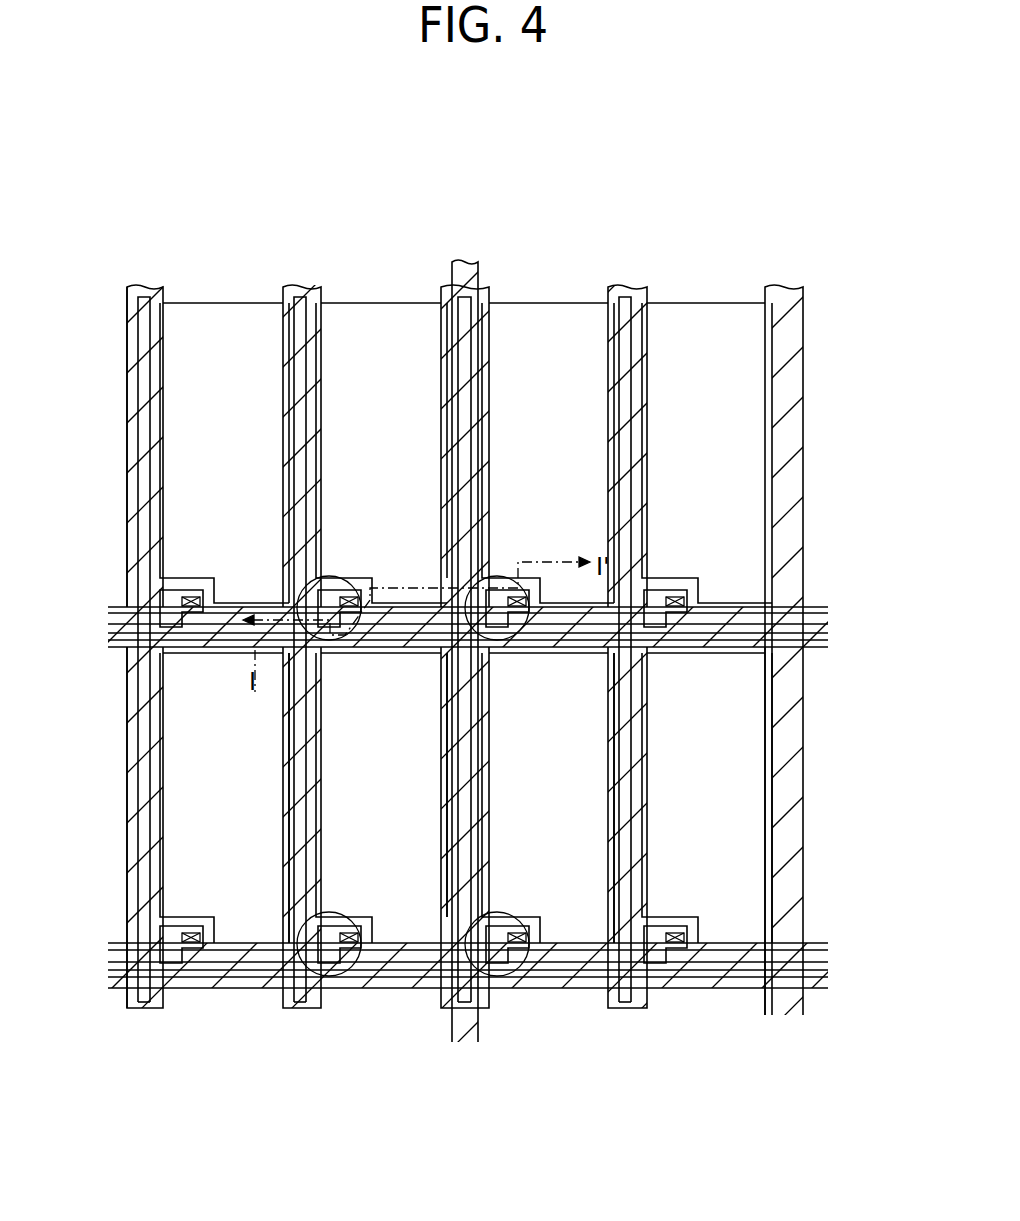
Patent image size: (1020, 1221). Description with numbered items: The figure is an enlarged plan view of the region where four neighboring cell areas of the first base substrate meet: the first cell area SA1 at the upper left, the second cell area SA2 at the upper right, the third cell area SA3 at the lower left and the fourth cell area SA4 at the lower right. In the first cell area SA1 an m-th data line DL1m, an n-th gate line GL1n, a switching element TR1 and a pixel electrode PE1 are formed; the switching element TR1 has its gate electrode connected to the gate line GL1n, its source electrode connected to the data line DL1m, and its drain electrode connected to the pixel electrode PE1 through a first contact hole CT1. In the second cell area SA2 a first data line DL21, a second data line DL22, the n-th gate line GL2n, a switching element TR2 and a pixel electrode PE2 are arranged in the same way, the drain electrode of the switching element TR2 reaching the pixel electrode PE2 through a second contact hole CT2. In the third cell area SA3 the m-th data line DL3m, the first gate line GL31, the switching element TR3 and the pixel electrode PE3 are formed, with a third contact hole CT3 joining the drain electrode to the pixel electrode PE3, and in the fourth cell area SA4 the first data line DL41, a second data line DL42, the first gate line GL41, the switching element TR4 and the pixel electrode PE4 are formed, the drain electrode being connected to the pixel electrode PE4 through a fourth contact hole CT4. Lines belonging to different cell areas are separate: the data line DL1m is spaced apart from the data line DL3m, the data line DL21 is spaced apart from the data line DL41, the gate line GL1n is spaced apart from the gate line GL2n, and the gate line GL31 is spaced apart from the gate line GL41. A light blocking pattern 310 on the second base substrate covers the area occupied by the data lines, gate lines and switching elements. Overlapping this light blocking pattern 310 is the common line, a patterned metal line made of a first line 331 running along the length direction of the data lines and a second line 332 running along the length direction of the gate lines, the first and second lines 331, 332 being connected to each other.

The m-th data line DL1m is at (303, 297).
The first data line DL21 is at (466, 300).
The data line of second pixel row DL22 is at (627, 297).
The m-th data line DL3m is at (301, 1002).
The first data line DL41 is at (461, 1002).
The data line of fourth pixel row DL42 is at (626, 1002).
The pixel electrode PE1 is at (353, 303).
The pixel electrode PE2 is at (574, 303).
The pixel electrode PE3 is at (241, 950).
The pixel electrode PE4 is at (567, 950).
The n-th gate line GL1n is at (116, 622).
The n-th gate line GL2n is at (800, 628).
The first gate line GL31 is at (118, 962).
The first gate line GL41 is at (790, 965).
The switching element TR1 is at (353, 636).
The switching element TR2 is at (516, 636).
The switching element TR3 is at (355, 976).
The switching element TR4 is at (517, 976).
The first contact hole CT1 is at (349, 597).
The second contact hole CT2 is at (516, 597).
The third contact hole CT3 is at (349, 933).
The fourth contact hole CT4 is at (516, 933).
The first cell area SA1 is at (113, 431).
The second cell area SA2 is at (813, 434).
The third cell area SA3 is at (113, 786).
The fourth cell area SA4 is at (813, 789).
The light blocking pattern 310 is at (447, 298).
The first line 331 is at (466, 262).
The second line 332 is at (830, 641).